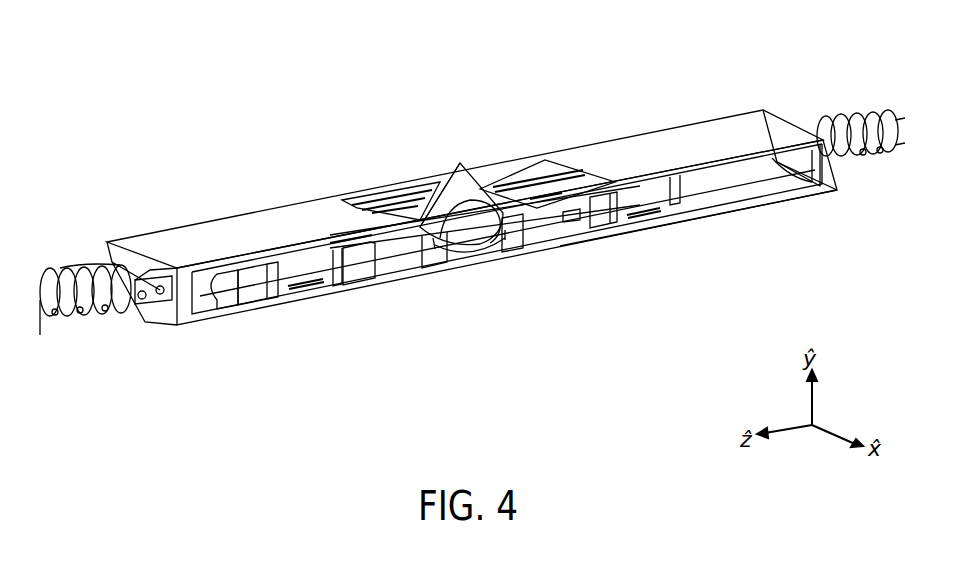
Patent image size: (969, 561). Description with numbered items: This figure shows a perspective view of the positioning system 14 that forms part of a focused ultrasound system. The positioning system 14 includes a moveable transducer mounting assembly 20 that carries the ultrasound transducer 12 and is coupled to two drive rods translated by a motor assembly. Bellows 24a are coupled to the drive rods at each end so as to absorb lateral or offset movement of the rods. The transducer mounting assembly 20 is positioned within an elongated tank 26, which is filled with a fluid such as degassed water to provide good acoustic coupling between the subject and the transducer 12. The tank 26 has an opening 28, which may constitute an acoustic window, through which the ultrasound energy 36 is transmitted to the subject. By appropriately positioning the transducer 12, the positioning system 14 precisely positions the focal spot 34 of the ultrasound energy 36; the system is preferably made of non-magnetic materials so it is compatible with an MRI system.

The positioning system 14 is at (258, 118).
The ultrasound transducer 12 is at (484, 245).
The transducer mounting assembly 20 is at (531, 168).
The bellows 24a is at (83, 262).
The tank 26 is at (753, 219).
The opening 28 is at (381, 188).
The focal spot 34 is at (462, 155).
The ultrasound energy 36 is at (449, 170).